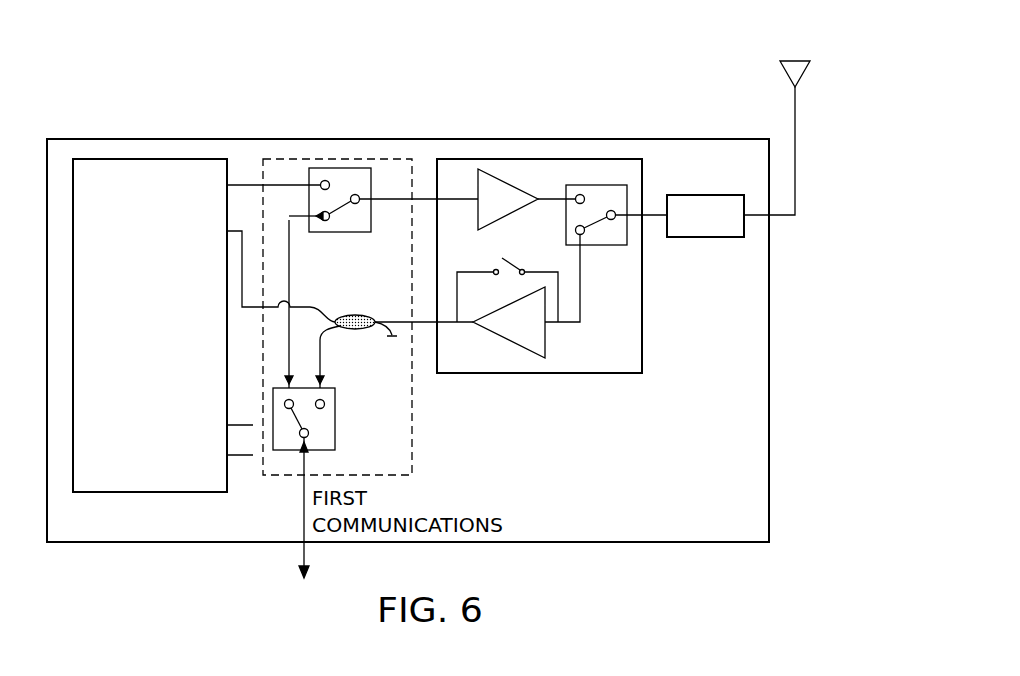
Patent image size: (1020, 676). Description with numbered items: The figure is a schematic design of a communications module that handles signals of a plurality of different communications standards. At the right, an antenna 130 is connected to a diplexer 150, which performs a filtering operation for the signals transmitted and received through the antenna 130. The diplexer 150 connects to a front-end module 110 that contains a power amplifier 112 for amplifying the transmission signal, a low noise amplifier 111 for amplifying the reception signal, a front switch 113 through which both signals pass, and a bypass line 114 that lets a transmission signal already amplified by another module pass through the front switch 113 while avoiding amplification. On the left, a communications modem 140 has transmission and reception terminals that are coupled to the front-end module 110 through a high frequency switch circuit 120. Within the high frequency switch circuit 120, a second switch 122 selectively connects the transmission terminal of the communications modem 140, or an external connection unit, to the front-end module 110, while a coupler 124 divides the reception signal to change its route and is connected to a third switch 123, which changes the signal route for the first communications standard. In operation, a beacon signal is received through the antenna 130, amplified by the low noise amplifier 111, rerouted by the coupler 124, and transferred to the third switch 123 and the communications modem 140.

The front-end module 110 is at (620, 159).
The low noise amplifier 111 is at (510, 340).
The power amplifier 112 is at (493, 170).
The front switch 113 is at (595, 185).
The bypass line 114 is at (475, 268).
The high frequency switch circuit 120 is at (297, 159).
The second switch 122 is at (347, 168).
The third switch 123 is at (335, 437).
The coupler 124 is at (353, 333).
The antenna 130 is at (788, 58).
The communications modem 140 is at (187, 159).
The diplexer 150 is at (690, 195).